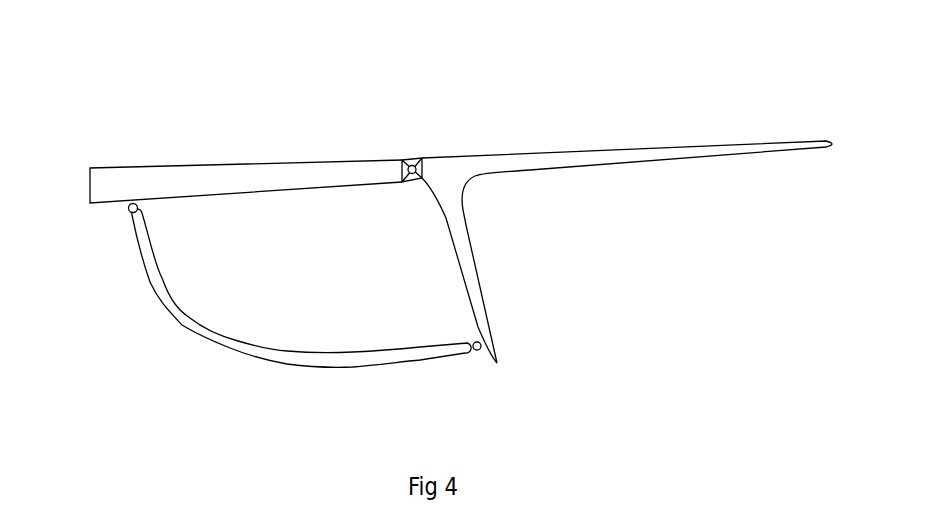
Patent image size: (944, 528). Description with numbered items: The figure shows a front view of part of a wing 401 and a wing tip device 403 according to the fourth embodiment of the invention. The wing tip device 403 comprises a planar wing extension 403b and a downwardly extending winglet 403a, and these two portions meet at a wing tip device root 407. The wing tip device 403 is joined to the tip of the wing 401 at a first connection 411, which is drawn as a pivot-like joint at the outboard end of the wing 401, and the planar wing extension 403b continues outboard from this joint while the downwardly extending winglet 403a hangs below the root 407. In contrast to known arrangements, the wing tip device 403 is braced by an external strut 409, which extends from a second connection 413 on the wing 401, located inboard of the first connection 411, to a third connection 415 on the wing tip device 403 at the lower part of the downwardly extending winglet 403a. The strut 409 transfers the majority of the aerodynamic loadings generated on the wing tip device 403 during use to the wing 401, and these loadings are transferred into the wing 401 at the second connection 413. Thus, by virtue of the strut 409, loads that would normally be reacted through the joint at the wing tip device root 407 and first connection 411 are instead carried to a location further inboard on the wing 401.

The wing 401 is at (262, 175).
The wing tip device 403 is at (461, 193).
The downwardly extending winglet 403a is at (482, 282).
The planar wing extension 403b is at (617, 151).
The wing tip device root 407 is at (455, 168).
The external strut 409 is at (262, 362).
The first connection 411 is at (408, 158).
The second connection 413 is at (127, 212).
The third connection 415 is at (475, 350).